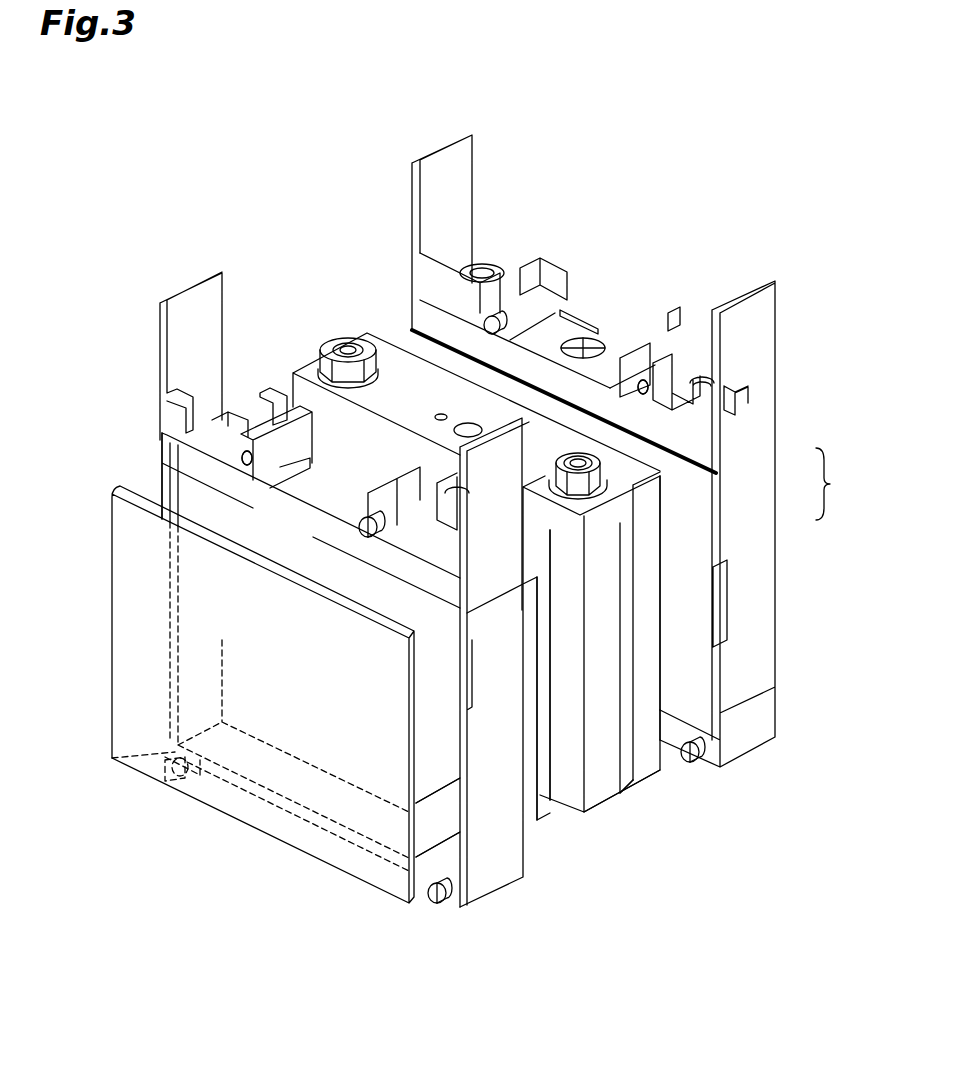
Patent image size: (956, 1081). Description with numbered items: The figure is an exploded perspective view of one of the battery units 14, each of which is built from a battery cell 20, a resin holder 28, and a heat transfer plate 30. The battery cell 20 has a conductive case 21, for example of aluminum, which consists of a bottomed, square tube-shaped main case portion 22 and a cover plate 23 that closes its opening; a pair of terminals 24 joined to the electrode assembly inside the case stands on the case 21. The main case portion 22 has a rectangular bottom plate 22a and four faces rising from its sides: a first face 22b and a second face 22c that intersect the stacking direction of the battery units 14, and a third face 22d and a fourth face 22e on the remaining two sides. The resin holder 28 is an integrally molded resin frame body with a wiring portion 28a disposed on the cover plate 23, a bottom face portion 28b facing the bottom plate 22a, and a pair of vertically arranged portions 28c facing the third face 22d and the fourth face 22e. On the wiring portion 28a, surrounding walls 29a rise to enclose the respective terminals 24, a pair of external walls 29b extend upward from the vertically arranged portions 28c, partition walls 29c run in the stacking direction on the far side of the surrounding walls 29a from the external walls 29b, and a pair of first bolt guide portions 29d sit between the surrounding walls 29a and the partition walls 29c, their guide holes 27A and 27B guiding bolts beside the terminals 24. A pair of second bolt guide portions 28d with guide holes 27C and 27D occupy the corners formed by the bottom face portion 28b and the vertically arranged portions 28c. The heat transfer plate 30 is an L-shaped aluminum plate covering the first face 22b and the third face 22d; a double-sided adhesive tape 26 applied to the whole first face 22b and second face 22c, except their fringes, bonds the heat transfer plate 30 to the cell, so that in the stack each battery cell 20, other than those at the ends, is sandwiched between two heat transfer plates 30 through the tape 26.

The battery unit 14 is at (407, 138).
The battery cell 20 is at (612, 818).
The case 21 is at (835, 484).
The main case portion 22 is at (620, 523).
The bottom plate 22a is at (610, 797).
The first face 22b is at (558, 620).
The second face 22c is at (613, 557).
The third face 22d is at (305, 385).
The fourth face 22e is at (620, 680).
The cover plate 23 is at (633, 483).
The terminal 24 is at (348, 348).
The double-sided adhesive tape 26 is at (552, 773).
The guide hole 27A is at (243, 460).
The guide hole 27B is at (367, 527).
The guide hole 27C is at (170, 773).
The guide hole 27D is at (440, 895).
The resin holder 28 is at (492, 917).
The wiring portion 28a is at (155, 376).
The bottom face portion 28b is at (432, 843).
The vertically arranged portion 28c is at (500, 753).
The second bolt guide portion 28d is at (450, 905).
The surrounding wall 29a is at (282, 395).
The external wall 29b is at (222, 300).
The partition wall 29c is at (307, 430).
The first bolt guide portion 29d is at (243, 432).
The heat transfer plate 30 is at (238, 800).